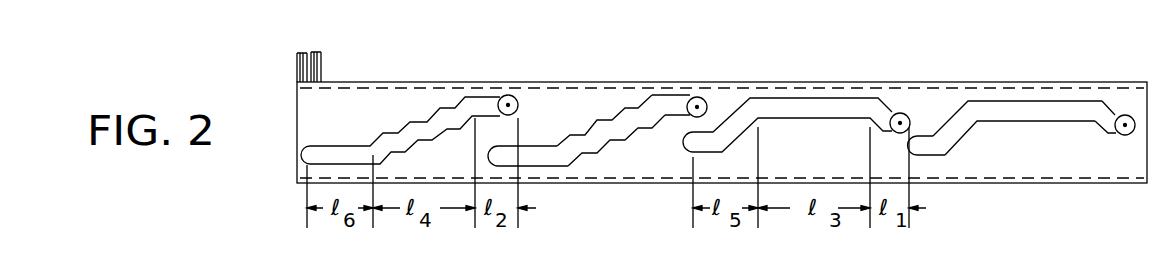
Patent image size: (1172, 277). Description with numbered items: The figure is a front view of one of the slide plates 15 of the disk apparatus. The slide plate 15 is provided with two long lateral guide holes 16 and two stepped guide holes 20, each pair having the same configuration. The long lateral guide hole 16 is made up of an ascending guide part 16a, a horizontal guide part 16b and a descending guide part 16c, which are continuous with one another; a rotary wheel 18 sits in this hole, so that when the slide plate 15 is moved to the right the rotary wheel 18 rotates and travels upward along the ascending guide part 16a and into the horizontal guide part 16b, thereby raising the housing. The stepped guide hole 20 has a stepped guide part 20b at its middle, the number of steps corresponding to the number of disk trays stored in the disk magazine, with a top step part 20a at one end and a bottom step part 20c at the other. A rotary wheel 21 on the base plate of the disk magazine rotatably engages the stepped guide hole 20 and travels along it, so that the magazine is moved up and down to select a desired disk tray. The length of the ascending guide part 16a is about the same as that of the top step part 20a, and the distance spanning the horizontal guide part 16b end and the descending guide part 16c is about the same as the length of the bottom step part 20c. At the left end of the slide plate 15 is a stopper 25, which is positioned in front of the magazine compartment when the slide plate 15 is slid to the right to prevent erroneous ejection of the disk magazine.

The slide plate 15 is at (803, 73).
The stopper 25 is at (321, 52).
The long lateral guide hole 16 is at (1023, 112).
The ascending guide part 16a is at (1110, 131).
The horizontal guide part 16b is at (1038, 117).
The descending guide part 16c is at (943, 151).
The rotary wheel 18 is at (1118, 115).
The stepped guide hole 20 is at (597, 114).
The top step part 20a is at (673, 117).
The stepped guide part 20b is at (615, 138).
The bottom step part 20c is at (538, 152).
The rotary wheel 21 is at (690, 100).